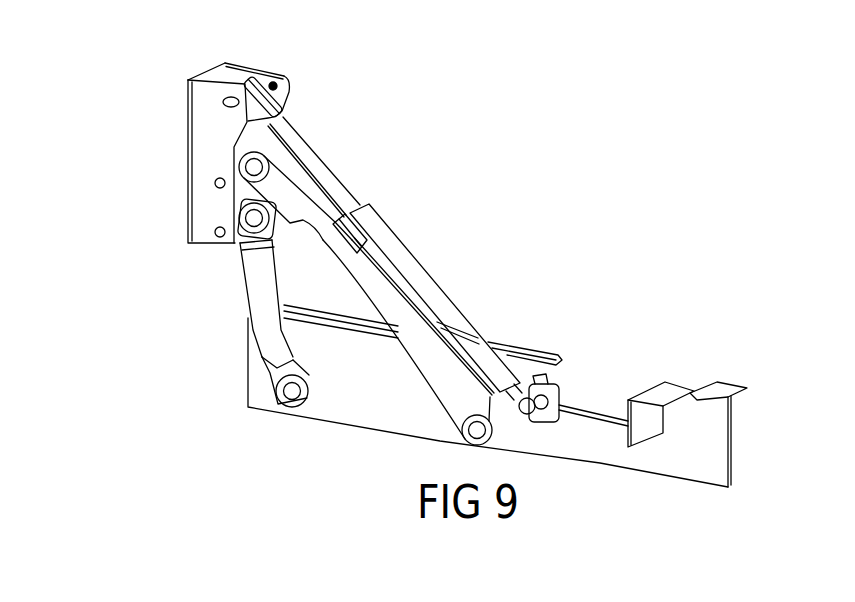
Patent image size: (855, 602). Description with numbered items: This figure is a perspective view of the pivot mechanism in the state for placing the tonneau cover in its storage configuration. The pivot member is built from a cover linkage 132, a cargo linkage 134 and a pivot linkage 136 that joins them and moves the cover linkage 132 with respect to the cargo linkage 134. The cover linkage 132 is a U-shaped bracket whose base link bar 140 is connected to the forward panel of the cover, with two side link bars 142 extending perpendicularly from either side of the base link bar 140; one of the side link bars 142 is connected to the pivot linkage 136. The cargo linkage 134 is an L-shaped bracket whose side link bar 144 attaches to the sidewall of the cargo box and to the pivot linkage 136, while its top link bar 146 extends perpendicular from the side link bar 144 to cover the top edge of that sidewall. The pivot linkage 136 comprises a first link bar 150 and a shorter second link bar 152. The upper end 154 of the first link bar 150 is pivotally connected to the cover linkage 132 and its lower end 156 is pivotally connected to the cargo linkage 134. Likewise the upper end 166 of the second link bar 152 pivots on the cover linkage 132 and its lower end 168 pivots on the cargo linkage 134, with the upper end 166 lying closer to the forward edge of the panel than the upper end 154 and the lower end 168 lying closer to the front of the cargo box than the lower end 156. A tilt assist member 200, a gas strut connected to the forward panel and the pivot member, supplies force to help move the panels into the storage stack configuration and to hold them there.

The cover linkage 132 is at (172, 113).
The cargo linkage 134 is at (662, 492).
The pivot linkage 136 is at (210, 278).
The base link bar 140 is at (222, 62).
The side link bar 142 is at (236, 74).
The side link bar 144 is at (707, 430).
The top link bar 146 is at (529, 354).
The first link bar 150 is at (430, 355).
The second link bar 152 is at (273, 347).
The upper end of the first link bar 154 is at (272, 150).
The lower end of the first link bar 156 is at (458, 438).
The upper end of the second link bar 166 is at (292, 222).
The lower end of the second link bar 168 is at (307, 380).
The tilt assist member 200 is at (442, 300).